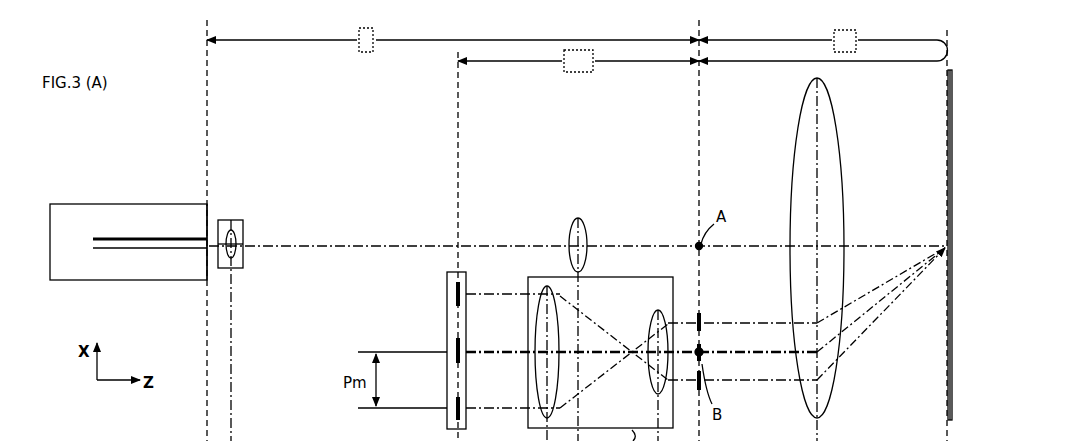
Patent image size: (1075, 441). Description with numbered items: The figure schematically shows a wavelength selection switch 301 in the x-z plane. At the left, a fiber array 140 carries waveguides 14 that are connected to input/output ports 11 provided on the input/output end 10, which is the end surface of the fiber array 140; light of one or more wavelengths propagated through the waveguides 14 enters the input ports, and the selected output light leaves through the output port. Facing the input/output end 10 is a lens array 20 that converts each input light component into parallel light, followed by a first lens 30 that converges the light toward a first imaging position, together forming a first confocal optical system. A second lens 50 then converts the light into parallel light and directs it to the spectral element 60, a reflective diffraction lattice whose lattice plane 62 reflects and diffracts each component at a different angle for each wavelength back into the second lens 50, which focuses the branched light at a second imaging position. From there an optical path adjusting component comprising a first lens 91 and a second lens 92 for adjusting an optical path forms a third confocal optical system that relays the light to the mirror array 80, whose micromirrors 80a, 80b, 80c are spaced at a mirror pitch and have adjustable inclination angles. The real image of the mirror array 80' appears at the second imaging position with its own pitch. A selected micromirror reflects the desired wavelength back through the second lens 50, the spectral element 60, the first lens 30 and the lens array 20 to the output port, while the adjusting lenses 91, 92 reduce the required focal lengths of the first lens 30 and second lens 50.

The wavelength selection switch 301 is at (998, 77).
The fiber array 140 is at (143, 203).
The waveguides 14 is at (100, 238).
The input/output ports 11 is at (205, 239).
The input/output end 10 is at (207, 283).
The lens array 20 is at (232, 218).
The first lens 30 is at (580, 219).
The mirror array 80 is at (435, 356).
The micromirror 80a is at (455, 288).
The micromirror 80b is at (455, 346).
The micromirror 80c is at (455, 403).
The real image of the mirror array 80' is at (715, 339).
The second lens for adjusting an optical path 92 is at (547, 419).
The first lens for adjusting an optical path 91 is at (656, 394).
The second lens 50 is at (832, 108).
The spectral element 60 is at (947, 105).
The lattice plane 62 is at (947, 128).